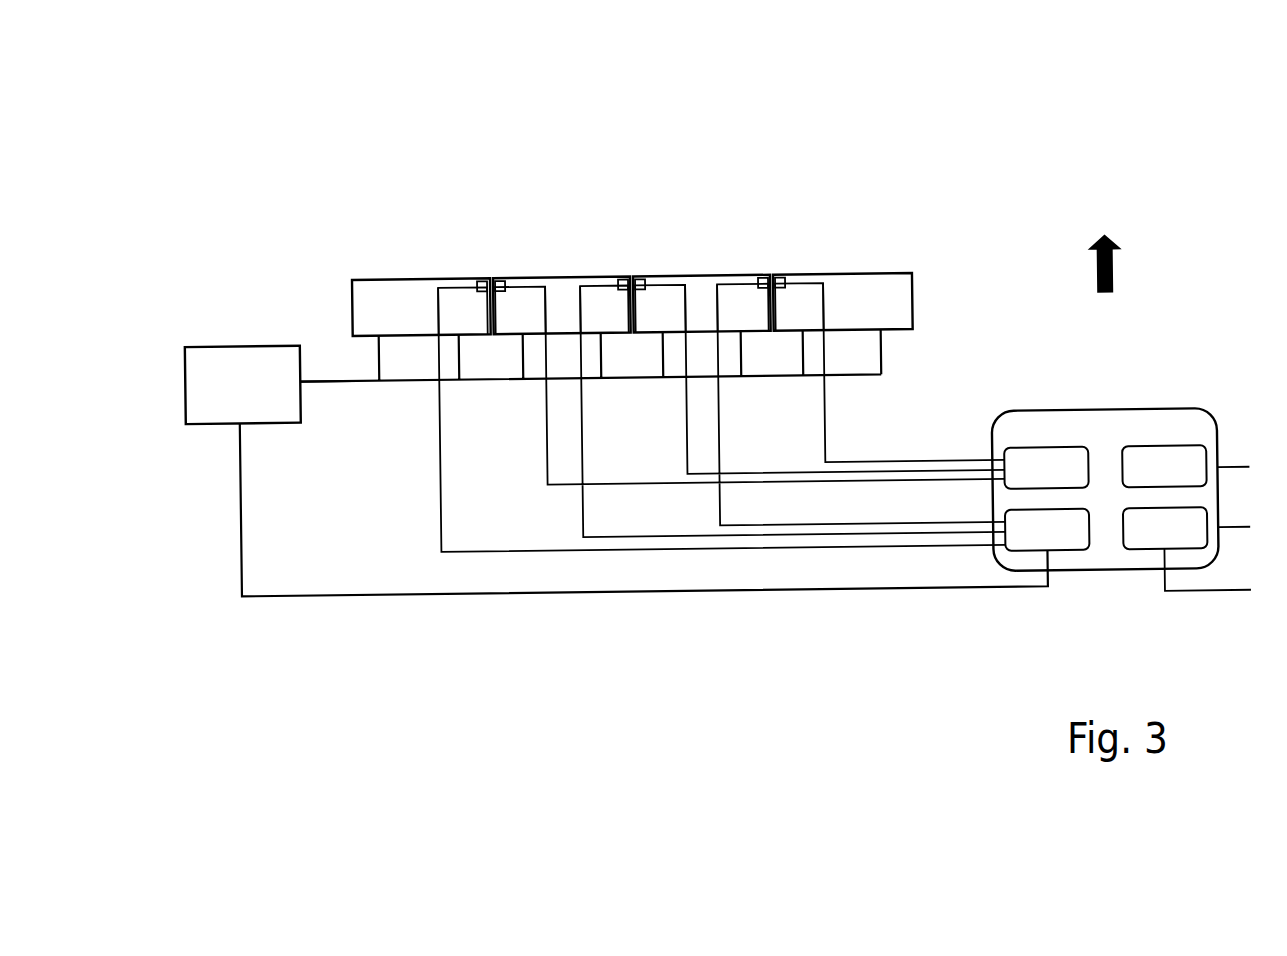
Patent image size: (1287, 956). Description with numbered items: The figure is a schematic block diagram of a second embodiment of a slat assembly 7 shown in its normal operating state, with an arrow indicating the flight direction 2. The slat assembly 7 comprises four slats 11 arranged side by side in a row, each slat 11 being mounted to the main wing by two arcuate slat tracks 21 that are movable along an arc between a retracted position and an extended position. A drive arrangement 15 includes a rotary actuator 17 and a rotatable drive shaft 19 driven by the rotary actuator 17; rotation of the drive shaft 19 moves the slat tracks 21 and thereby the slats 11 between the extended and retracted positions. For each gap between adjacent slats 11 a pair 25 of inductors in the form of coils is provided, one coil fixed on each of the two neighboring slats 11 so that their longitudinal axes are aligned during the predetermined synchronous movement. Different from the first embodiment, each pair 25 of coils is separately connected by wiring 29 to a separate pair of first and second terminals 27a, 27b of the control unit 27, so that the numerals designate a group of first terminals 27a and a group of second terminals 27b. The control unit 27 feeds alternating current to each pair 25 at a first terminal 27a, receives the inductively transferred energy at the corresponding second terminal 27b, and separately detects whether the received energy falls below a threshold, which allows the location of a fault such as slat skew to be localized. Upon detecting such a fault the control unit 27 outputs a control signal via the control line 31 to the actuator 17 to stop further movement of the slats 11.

The slat assembly 7 is at (271, 166).
The drive arrangement 15 is at (277, 310).
The slat 11 is at (383, 293).
The pair of inductors 25 is at (504, 255).
The slat track 21 is at (378, 370).
The drive shaft 19 is at (331, 382).
The rotary actuator 17 is at (184, 373).
The wiring 29 is at (600, 486).
The control line 31 is at (879, 594).
The control unit 27 is at (1131, 488).
The first terminal 27a is at (1022, 465).
The second terminal 27b is at (1202, 551).
The flight direction 2 is at (1120, 272).